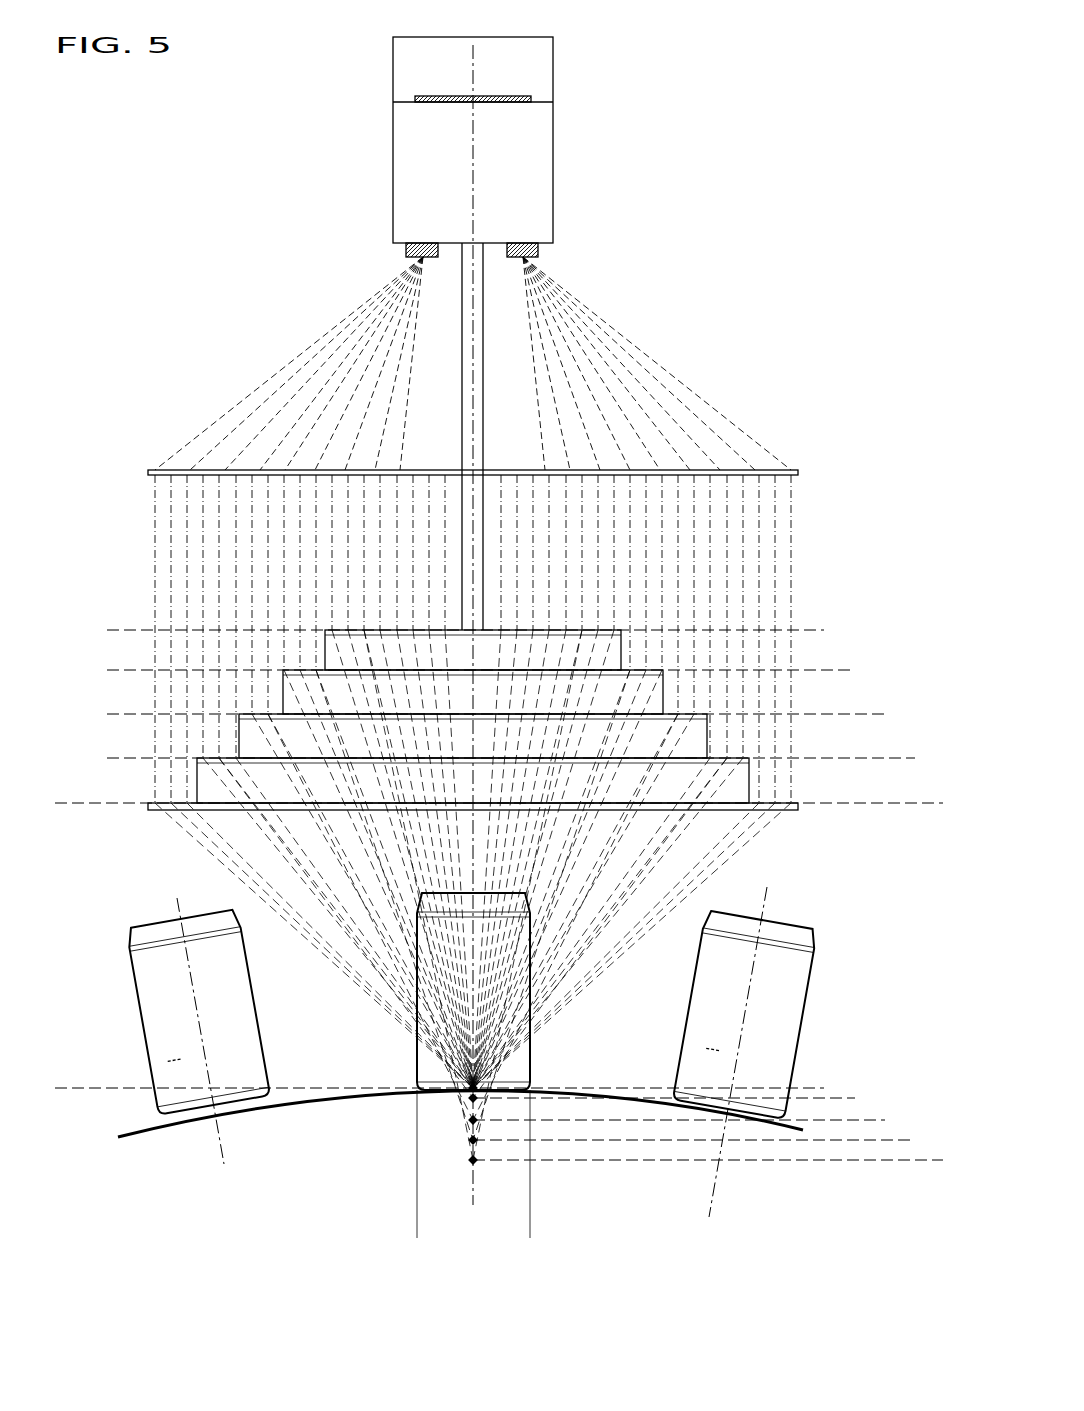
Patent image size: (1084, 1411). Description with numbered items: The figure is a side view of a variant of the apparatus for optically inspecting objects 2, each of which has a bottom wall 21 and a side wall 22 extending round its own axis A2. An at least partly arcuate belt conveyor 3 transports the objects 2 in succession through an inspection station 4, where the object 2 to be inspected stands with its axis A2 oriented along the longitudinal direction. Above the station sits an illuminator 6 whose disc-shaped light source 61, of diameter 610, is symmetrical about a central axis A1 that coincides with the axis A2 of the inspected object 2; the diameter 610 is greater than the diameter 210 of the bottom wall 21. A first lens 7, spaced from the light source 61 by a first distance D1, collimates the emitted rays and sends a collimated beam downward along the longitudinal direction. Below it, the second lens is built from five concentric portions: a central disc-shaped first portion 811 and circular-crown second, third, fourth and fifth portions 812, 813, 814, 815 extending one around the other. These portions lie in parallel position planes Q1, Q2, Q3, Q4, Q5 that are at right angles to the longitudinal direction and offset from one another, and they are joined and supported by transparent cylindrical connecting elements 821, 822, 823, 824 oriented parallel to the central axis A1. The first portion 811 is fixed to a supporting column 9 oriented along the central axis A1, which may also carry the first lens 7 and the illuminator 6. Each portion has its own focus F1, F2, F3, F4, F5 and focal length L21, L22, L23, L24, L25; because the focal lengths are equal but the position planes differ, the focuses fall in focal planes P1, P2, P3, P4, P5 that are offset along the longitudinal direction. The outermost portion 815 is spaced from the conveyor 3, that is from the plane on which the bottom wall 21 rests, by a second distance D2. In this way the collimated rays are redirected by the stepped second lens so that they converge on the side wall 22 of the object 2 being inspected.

The object 2 is at (460, 933).
The bottom wall 21 is at (495, 1093).
The side wall 22 is at (440, 998).
The diameter of the bottom wall 210 is at (580, 1238).
The conveyor 3 is at (120, 1135).
The inspection station 4 is at (395, 1102).
The illuminator 6 is at (520, 157).
The light source 61 is at (540, 250).
The diameter of the light source 610 is at (553, 37).
The first lens 7 is at (705, 472).
The supporting column 9 is at (484, 295).
The first portion 811 is at (375, 630).
The second portion 812 is at (305, 670).
The third portion 813 is at (258, 714).
The fourth portion 814 is at (220, 758).
The fifth portion 815 is at (163, 807).
The connecting element 821 is at (620, 655).
The connecting element 822 is at (662, 698).
The connecting element 823 is at (707, 738).
The connecting element 824 is at (749, 785).
The central axis A1 is at (476, 85).
The axis of the object A2 is at (217, 1148).
The first distance D1 is at (406, 257).
The second distance D2 is at (55, 803).
The focus F1 is at (473, 1088).
The focus F2 is at (473, 1098).
The focus F3 is at (473, 1120).
The focus F4 is at (473, 1140).
The focus F5 is at (473, 1160).
The focal length L21 is at (824, 1088).
The focal length L22 is at (855, 670).
The focal length L23 is at (885, 714).
The focal length L24 is at (915, 758).
The focal length L25 is at (943, 803).
The focal plane P1 is at (805, 1090).
The focal plane P2 is at (835, 1100).
The focal plane P3 is at (863, 1122).
The focal plane P4 is at (893, 1142).
The focal plane P5 is at (755, 1162).
The position plane Q1 is at (137, 628).
The position plane Q2 is at (107, 668).
The position plane Q3 is at (107, 713).
The position plane Q4 is at (107, 757).
The position plane Q5 is at (108, 803).